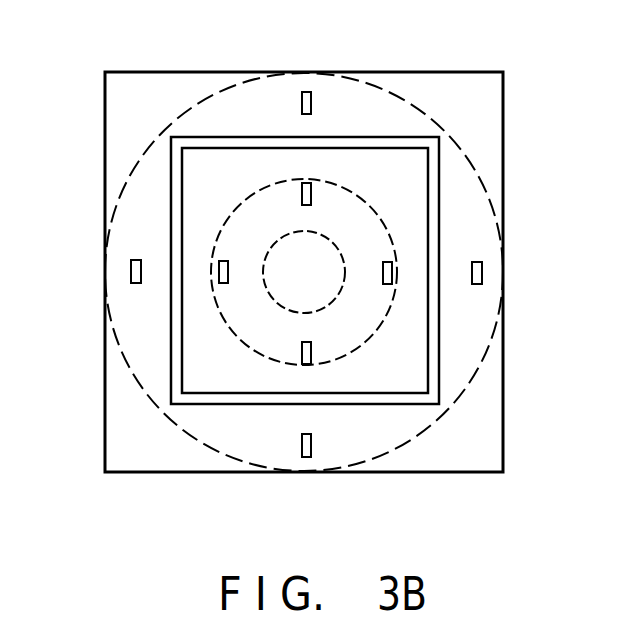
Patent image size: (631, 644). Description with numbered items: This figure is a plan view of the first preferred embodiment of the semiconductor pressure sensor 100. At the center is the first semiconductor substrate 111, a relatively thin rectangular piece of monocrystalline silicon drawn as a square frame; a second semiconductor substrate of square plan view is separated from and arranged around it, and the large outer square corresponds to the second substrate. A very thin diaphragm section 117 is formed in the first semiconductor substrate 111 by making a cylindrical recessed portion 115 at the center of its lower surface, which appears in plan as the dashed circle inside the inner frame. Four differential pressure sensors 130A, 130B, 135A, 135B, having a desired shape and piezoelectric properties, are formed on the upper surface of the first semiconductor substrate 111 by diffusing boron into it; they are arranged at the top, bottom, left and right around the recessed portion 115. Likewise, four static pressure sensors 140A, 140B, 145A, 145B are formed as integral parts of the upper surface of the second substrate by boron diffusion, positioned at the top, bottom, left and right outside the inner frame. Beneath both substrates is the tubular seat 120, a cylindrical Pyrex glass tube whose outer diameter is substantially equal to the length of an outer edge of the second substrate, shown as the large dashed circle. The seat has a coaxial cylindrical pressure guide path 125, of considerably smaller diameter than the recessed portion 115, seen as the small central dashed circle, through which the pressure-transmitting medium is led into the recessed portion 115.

The semiconductor pressure sensor 100 is at (104, 190).
The first semiconductor substrate 111 is at (403, 148).
The recessed portion 115 is at (387, 245).
The diaphragm section 117 is at (209, 182).
The tubular seat 120 is at (503, 160).
The pressure guide path 125 is at (320, 312).
The differential pressure sensor 130A is at (312, 197).
The differential pressure sensor 130B is at (302, 354).
The differential pressure sensor 135A is at (228, 278).
The differential pressure sensor 135B is at (383, 277).
The static pressure sensor 140A is at (306, 91).
The static pressure sensor 140B is at (303, 456).
The static pressure sensor 145A is at (131, 275).
The static pressure sensor 145B is at (482, 273).